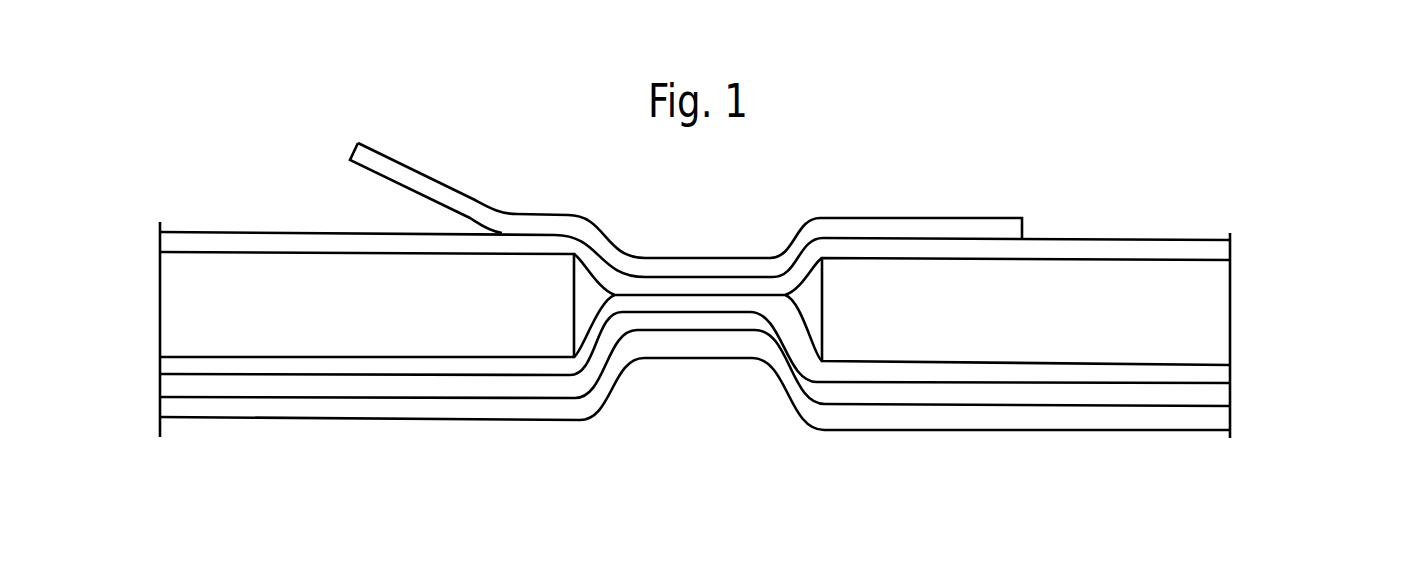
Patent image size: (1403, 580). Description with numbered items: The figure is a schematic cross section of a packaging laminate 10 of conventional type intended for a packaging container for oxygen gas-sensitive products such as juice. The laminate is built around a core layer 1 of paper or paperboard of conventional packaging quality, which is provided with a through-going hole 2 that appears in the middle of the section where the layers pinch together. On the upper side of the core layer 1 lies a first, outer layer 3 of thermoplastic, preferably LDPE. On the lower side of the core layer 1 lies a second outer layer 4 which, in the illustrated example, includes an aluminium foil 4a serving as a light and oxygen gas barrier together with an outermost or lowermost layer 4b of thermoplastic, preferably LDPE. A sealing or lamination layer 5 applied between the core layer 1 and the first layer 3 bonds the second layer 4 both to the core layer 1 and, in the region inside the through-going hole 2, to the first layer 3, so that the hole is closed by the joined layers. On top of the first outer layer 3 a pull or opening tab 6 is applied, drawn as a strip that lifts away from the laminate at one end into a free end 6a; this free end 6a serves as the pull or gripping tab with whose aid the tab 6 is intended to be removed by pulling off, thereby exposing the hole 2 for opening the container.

The packaging laminate 10 is at (1293, 250).
The core layer 1 is at (160, 295).
The through-going hole 2 is at (583, 300).
The first outer layer 3 is at (160, 238).
The second outer layer 4 is at (712, 405).
The aluminium foil 4a is at (1233, 390).
The outermost layer 4b is at (1233, 418).
The sealing or lamination layer 5 is at (158, 360).
The pull or opening tab 6 is at (995, 218).
The free end 6a is at (378, 153).